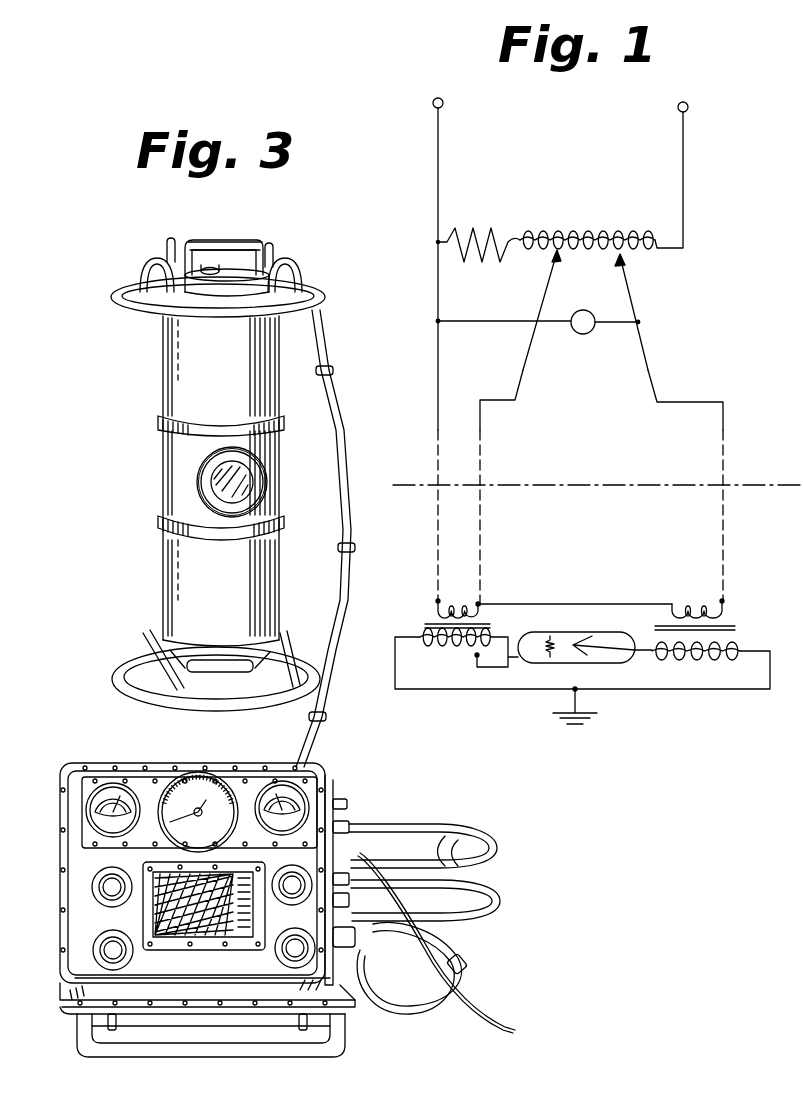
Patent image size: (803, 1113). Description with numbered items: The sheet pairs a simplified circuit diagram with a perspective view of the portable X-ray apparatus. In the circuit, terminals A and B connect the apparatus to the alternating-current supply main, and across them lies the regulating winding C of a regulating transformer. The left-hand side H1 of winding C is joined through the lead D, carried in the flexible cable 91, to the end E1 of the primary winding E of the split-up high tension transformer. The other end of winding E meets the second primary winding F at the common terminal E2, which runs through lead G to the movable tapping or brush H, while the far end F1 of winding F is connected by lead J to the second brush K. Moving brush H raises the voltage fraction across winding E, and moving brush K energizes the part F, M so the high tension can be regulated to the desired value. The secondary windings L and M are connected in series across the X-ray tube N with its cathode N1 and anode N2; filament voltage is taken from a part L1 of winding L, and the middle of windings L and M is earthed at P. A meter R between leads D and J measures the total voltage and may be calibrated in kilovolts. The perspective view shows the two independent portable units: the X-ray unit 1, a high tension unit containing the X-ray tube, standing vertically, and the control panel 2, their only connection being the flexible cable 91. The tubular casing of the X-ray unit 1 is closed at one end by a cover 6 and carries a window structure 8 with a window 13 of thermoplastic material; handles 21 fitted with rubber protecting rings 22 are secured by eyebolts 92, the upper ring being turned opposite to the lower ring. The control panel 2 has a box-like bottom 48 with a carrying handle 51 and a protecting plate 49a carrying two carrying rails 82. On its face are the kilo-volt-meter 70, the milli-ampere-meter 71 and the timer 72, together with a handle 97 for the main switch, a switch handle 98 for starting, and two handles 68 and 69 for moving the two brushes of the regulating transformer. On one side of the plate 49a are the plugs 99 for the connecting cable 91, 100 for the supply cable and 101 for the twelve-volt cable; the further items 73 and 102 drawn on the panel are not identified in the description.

In FIG. 1, the supply main terminal A is at (437, 90).
In FIG. 1, the supply main terminal B is at (683, 94).
In FIG. 1, the regulating winding C is at (576, 238).
In FIG. 1, the lead D is at (436, 389).
In FIG. 1, the primary winding E is at (453, 596).
In FIG. 1, the primary winding end E1 is at (437, 602).
In FIG. 1, the common terminal E2 is at (480, 600).
In FIG. 1, the primary winding F is at (694, 598).
In FIG. 1, the primary winding end F1 is at (722, 602).
In FIG. 1, the lead G is at (523, 376).
In FIG. 1, the movable tapping or brush H is at (558, 260).
In FIG. 1, the left-hand side of regulating winding H1 is at (437, 244).
In FIG. 1, the lead J is at (650, 368).
In FIG. 1, the movable tapping or brush K is at (628, 261).
In FIG. 1, the secondary winding L is at (438, 650).
In FIG. 1, the part of high tension winding L1 is at (480, 662).
In FIG. 1, the secondary winding M is at (684, 652).
In FIG. 1, the X-ray tube N is at (598, 654).
In FIG. 1, the cathode N1 is at (549, 658).
In FIG. 1, the anode N2 is at (586, 636).
In FIG. 1, the earth point P is at (583, 706).
In FIG. 1, the meter R is at (585, 330).
In FIG. 3, the X-ray unit 1 is at (162, 370).
In FIG. 3, the control panel 2 is at (164, 764).
In FIG. 3, the cover 6 is at (262, 280).
In FIG. 3, the window structure 8 is at (270, 462).
In FIG. 3, the window 13 is at (246, 489).
In FIG. 3, the handle 21 is at (241, 244).
In FIG. 3, the rubber protecting ring 22 is at (126, 290).
In FIG. 3, the bottom 48 is at (356, 1012).
In FIG. 3, the protecting plate 49a is at (75, 992).
In FIG. 3, the handle 51 is at (331, 1056).
In FIG. 3, the brush handle 68 is at (94, 954).
In FIG. 3, the brush handle 69 is at (280, 958).
In FIG. 3, the kilo-volt-meter 70 is at (106, 788).
In FIG. 3, the milli-ampere-meter 71 is at (298, 784).
In FIG. 3, the timer 72 is at (209, 774).
In FIG. 3, the indicator screen 73 is at (210, 938).
In FIG. 3, the carrying rail 82 is at (74, 913).
In FIG. 3, the flexible cable 91 is at (352, 467).
In FIG. 3, the eyebolt 92 is at (168, 244).
In FIG. 3, the main switch handle 97 is at (92, 882).
In FIG. 3, the starting switch handle 98 is at (300, 894).
In FIG. 3, the plug 99 is at (370, 940).
In FIG. 3, the plug 100 is at (378, 830).
In FIG. 3, the plug 101 is at (350, 820).
In FIG. 3, the cable connector 102 is at (344, 799).